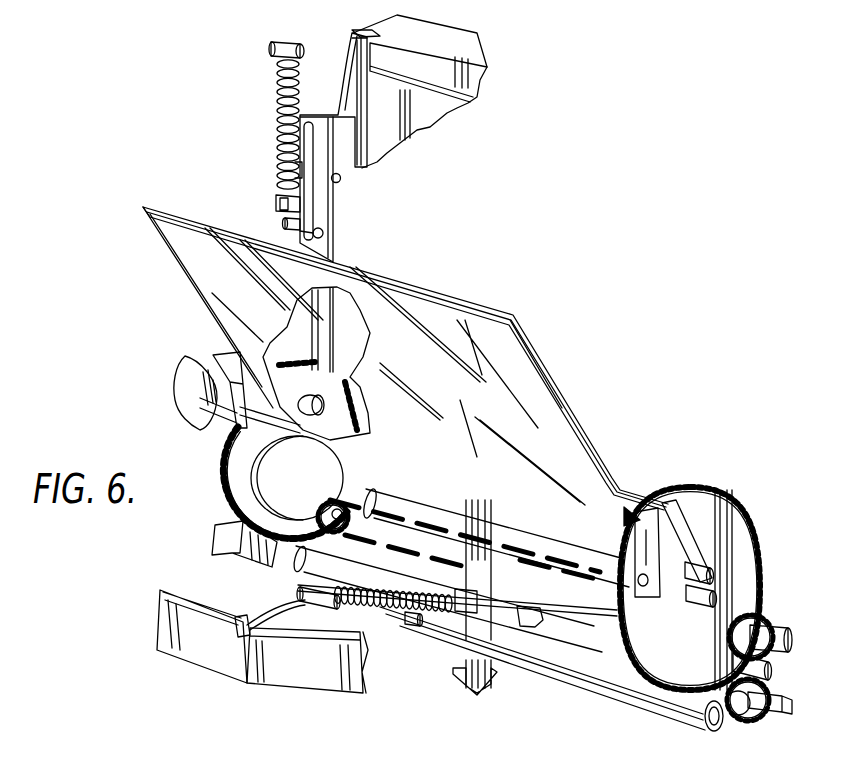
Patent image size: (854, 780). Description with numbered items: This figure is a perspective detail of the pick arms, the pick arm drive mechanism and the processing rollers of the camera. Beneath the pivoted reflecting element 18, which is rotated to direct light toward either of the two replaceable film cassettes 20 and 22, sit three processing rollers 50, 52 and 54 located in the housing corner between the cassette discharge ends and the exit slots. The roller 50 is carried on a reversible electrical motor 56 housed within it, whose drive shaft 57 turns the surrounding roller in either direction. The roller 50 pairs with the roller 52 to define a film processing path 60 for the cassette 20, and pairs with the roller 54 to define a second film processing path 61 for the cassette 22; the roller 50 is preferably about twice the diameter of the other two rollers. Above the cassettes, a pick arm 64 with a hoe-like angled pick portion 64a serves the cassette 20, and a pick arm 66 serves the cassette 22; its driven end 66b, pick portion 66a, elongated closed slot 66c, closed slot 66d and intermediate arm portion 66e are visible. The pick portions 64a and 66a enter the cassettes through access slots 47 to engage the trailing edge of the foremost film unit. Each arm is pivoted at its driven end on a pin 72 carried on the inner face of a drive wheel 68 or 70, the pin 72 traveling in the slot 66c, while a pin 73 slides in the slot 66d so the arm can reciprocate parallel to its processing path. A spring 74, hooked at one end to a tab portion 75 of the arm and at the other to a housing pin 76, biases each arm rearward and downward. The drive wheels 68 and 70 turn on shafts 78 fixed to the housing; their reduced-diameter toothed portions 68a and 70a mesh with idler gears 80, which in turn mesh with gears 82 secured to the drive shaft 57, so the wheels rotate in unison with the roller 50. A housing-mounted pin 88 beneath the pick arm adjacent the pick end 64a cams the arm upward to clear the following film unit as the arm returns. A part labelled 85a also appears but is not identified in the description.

The reflecting element 18 is at (533, 370).
The film cassette 20 is at (175, 390).
The film cassette 22 is at (483, 42).
The access slots 47 is at (395, 27).
The processing roller 50 is at (744, 726).
The processing roller 52 is at (752, 618).
The processing roller 54 is at (700, 727).
The reversible electrical motor 56 is at (762, 725).
The drive shaft 57 is at (792, 708).
The film processing path 60 is at (420, 560).
The second film processing path 61 is at (488, 670).
The pick arm 64 is at (520, 608).
The pick portion 64a is at (240, 614).
The pick arm 66 is at (343, 216).
The pick portion 66a is at (353, 37).
The driven end 66b is at (345, 360).
The elongated closed slot 66c is at (232, 444).
The closed slot 66d is at (310, 131).
The arm portion 66e is at (299, 168).
The drive wheel 68 is at (735, 497).
The toothed portion 68a is at (748, 526).
The drive wheel 70 is at (222, 482).
The toothed portion 70a is at (228, 504).
The pin 72 is at (322, 401).
The pin 73 is at (323, 233).
The spring 74 is at (281, 120).
The tab portion 75 is at (276, 208).
The pin 76 is at (285, 42).
The shafts 78 is at (716, 600).
The idler gears 80 is at (770, 627).
The gears 82 is at (772, 676).
The tab 85a is at (36, 772).
The pin 88 is at (341, 179).